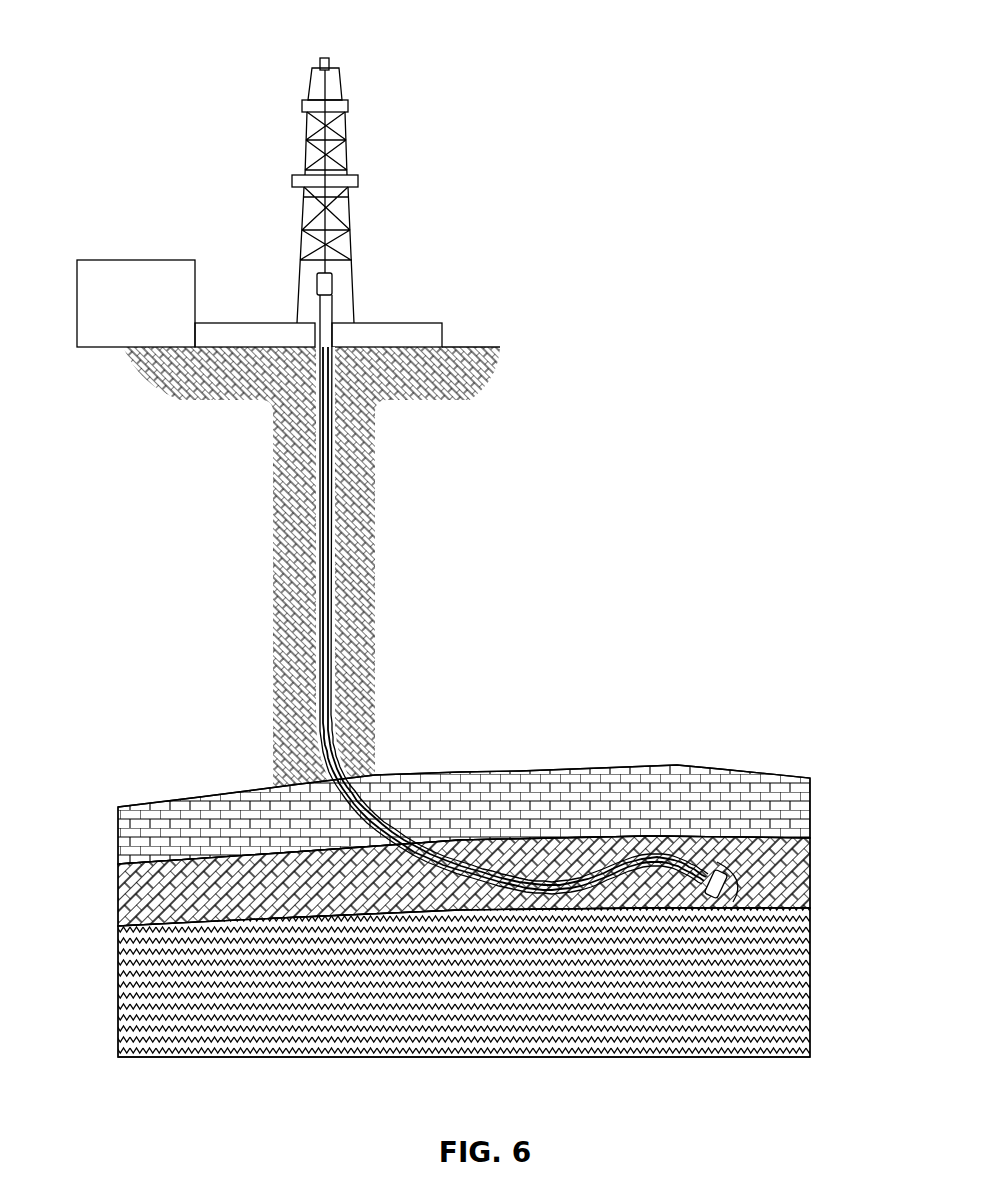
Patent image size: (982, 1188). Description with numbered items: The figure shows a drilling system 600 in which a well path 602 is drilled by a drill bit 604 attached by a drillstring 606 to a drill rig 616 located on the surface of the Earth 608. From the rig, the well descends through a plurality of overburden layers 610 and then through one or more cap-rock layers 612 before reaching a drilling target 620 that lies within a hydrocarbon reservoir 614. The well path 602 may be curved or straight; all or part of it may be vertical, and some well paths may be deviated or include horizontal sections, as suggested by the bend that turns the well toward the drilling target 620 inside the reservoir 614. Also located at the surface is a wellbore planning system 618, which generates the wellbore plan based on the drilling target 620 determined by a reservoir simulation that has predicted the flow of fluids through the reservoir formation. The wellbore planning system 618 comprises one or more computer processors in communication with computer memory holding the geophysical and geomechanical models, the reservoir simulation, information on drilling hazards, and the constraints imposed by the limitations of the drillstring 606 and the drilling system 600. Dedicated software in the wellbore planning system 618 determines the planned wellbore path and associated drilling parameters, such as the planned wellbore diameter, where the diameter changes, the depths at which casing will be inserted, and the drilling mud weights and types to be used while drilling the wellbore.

The drilling system 600 is at (575, 58).
The well path 602 is at (313, 500).
The drill bit 604 is at (716, 868).
The drillstring 606 is at (330, 308).
The surface of the Earth 608 is at (500, 347).
The overburden layers 610 is at (367, 463).
The cap-rock layers 612 is at (118, 820).
The hydrocarbon reservoir 614 is at (118, 910).
The drill rig 616 is at (348, 205).
The wellbore planning system 618 is at (137, 260).
The drilling target 620 is at (807, 870).